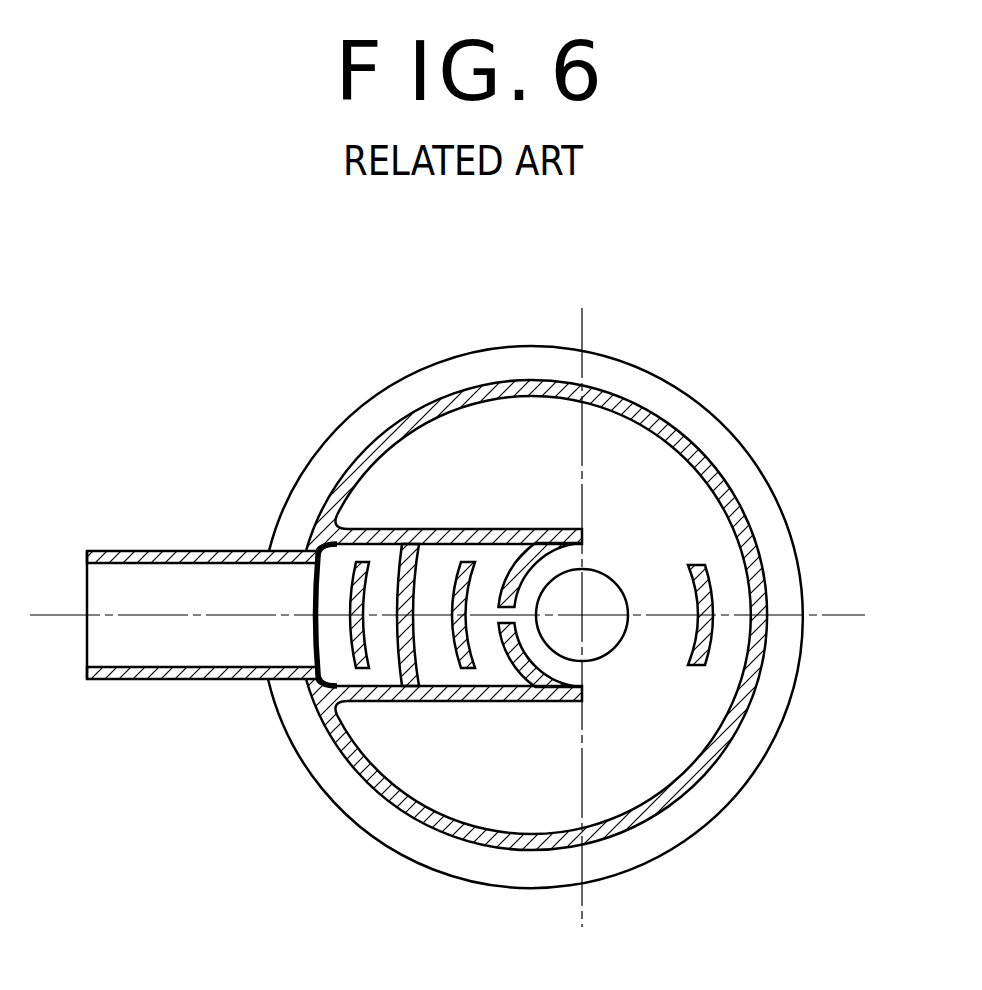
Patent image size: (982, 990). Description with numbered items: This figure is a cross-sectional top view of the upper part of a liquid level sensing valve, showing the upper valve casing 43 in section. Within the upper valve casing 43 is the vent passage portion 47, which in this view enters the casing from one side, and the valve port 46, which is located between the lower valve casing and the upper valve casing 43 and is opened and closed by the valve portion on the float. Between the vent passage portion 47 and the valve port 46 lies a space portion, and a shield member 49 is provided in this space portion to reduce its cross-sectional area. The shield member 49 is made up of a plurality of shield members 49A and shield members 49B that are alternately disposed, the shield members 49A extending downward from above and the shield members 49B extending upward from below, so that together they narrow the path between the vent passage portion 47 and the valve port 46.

The upper valve casing 43 is at (685, 443).
The valve port 46 is at (598, 602).
The vent passage portion 47 is at (165, 551).
The shield member 49 is at (467, 519).
The shield member 49A is at (458, 642).
The shield member 49B is at (515, 652).